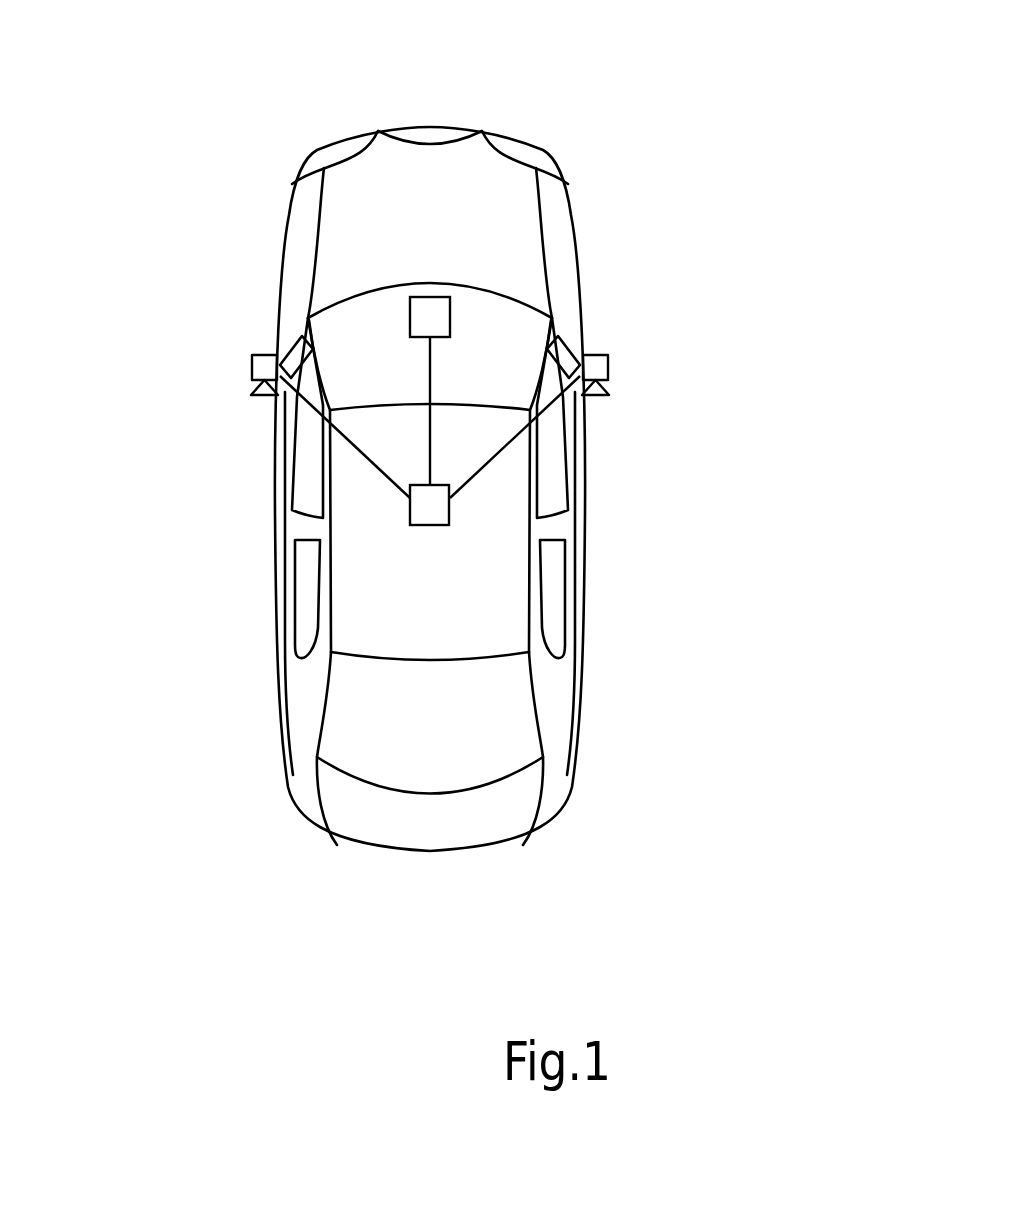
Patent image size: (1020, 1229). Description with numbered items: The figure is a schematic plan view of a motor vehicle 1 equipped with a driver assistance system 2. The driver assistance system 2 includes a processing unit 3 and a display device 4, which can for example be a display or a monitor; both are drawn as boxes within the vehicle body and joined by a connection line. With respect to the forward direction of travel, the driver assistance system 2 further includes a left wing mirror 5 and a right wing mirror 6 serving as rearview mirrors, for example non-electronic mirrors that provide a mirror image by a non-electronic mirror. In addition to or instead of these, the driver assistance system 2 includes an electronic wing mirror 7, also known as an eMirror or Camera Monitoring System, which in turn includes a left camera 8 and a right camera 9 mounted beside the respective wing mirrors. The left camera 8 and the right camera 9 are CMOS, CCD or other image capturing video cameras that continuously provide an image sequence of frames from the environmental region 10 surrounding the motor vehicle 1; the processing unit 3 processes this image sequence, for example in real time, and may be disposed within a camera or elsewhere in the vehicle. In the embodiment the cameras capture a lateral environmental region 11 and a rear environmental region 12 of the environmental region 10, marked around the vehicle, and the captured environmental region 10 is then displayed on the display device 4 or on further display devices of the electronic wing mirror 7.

The motor vehicle 1 is at (585, 220).
The driver assistance system 2 is at (486, 498).
The processing unit 3 is at (430, 510).
The display device 4 is at (430, 303).
The left wing mirror 5 is at (294, 354).
The right wing mirror 6 is at (566, 354).
The electronic wing mirror 7 is at (622, 388).
The left camera 8 is at (260, 367).
The right camera 9 is at (600, 367).
The environmental region 10 is at (416, 54).
The lateral environmental region 11 is at (174, 529).
The rear environmental region 12 is at (416, 936).